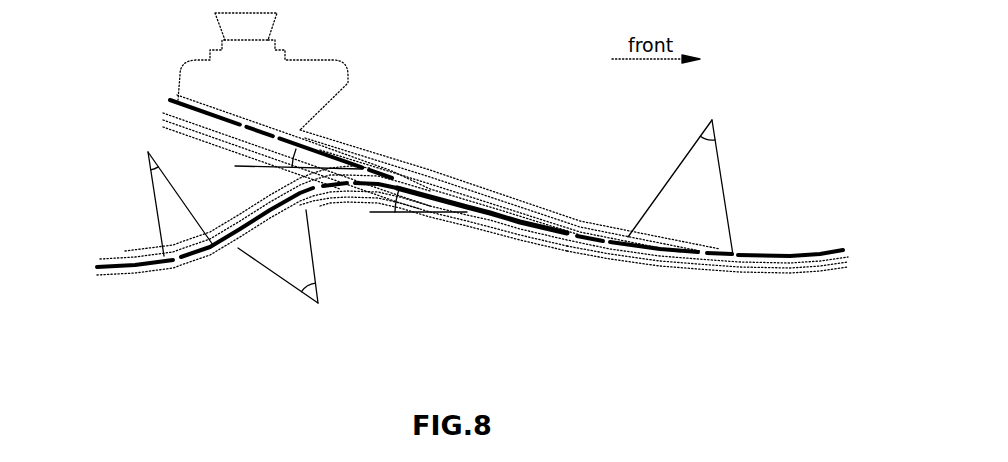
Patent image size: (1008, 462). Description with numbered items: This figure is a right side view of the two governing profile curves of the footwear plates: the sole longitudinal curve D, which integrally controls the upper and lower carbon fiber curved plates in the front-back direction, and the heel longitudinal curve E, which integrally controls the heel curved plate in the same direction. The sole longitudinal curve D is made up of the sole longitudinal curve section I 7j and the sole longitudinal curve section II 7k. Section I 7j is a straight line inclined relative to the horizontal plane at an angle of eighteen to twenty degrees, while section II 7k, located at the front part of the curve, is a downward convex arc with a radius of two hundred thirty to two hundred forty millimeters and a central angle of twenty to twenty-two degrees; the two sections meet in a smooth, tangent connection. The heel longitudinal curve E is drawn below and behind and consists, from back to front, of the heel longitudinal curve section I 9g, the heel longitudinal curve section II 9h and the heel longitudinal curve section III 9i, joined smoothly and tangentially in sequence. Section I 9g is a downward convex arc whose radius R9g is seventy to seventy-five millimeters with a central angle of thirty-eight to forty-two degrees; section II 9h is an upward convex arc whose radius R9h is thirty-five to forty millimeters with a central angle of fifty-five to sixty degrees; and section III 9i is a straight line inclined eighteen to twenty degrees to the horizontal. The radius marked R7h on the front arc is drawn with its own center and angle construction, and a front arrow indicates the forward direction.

The sole longitudinal curve D is at (173, 100).
The heel longitudinal curve E is at (123, 253).
The sole longitudinal curve section I 7j is at (353, 162).
The sole longitudinal curve section II 7k is at (640, 243).
The heel longitudinal curve section I 9g is at (197, 260).
The heel longitudinal curve section II 9h is at (310, 202).
The heel longitudinal curve section III 9i is at (418, 208).
The arc radius of heel longitudinal curve section I R9g is at (168, 181).
The arc radius of heel longitudinal curve section II R9h is at (313, 263).
The radius of curvature of portion 7h R7h is at (681, 163).